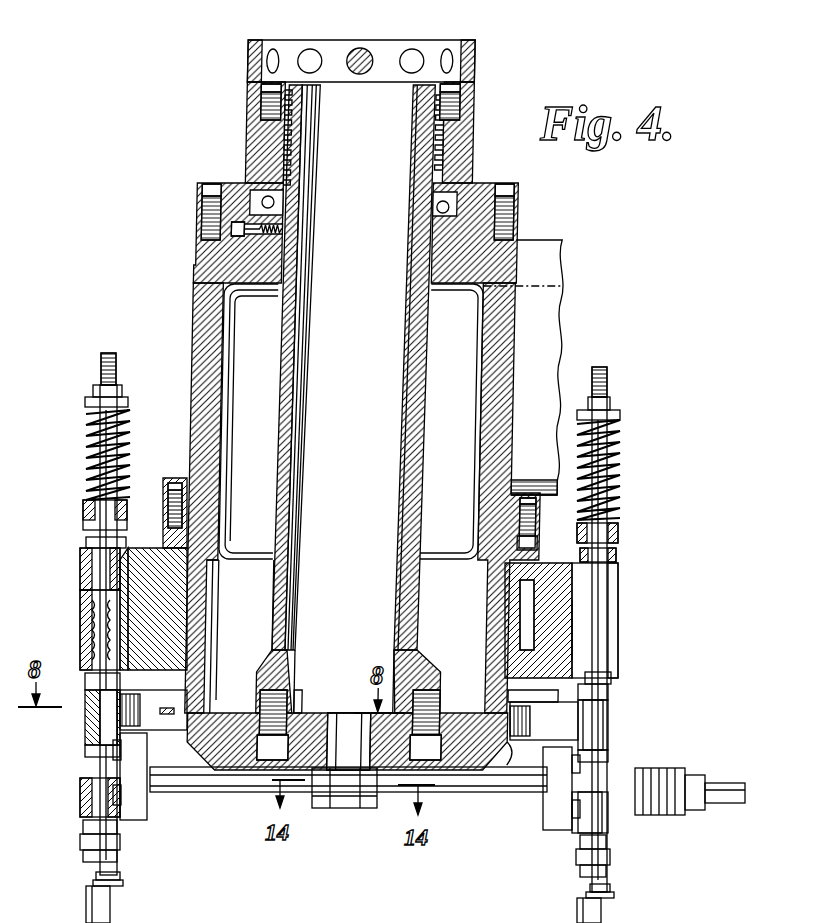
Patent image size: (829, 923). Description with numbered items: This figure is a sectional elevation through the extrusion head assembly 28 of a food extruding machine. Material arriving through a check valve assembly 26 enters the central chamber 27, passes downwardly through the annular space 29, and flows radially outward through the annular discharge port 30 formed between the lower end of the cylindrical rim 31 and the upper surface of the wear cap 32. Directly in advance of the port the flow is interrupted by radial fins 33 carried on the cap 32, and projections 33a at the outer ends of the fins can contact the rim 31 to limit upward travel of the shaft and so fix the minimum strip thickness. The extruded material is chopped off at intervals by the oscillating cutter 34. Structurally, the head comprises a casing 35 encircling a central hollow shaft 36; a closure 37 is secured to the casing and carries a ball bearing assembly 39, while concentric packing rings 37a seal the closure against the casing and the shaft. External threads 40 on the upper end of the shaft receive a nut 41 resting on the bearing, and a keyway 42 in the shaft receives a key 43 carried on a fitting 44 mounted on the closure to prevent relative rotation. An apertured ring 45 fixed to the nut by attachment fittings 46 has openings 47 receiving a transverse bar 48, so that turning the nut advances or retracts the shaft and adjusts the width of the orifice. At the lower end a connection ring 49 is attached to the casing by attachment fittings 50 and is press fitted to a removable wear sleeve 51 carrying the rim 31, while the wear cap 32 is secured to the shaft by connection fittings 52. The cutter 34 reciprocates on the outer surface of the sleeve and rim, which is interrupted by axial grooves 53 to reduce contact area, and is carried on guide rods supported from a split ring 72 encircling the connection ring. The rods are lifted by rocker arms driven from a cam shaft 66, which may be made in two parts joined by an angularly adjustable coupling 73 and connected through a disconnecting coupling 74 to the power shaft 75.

The check valve assembly 26 is at (222, 922).
The central chamber 27 is at (480, 332).
The extrusion head assembly 28 is at (192, 278).
The annular space 29 is at (540, 592).
The annular discharge port 30 is at (518, 760).
The cylindrical rim 31 is at (500, 778).
The wear cap 32 is at (350, 738).
The radial fins 33 is at (470, 743).
The projections 33a is at (229, 696).
The oscillating cutter 34 is at (548, 736).
The casing 35 is at (201, 333).
The central hollow shaft 36 is at (420, 367).
The closure 37 is at (495, 224).
The packing rings 37a is at (470, 292).
The ball bearing assembly 39 is at (446, 203).
The external threads 40 is at (443, 153).
The nut 41 is at (247, 133).
The keyway 42 is at (274, 202).
The key 43 is at (283, 230).
The fitting 44 is at (240, 224).
The apertured ring 45 is at (386, 53).
The attachment fittings 46 is at (256, 98).
The openings 47 is at (276, 48).
The transverse bar 48 is at (360, 49).
The connection ring 49 is at (532, 540).
The attachment fittings 50 is at (540, 512).
The wear sleeve 51 is at (525, 637).
The connection fittings 52 is at (336, 706).
The grooves 53 is at (536, 690).
The cam shaft 66 is at (385, 792).
The split ring 72 is at (140, 560).
The angularly adjustable coupling 73 is at (336, 812).
The disconnecting coupling 74 is at (662, 770).
The power shaft 75 is at (720, 784).